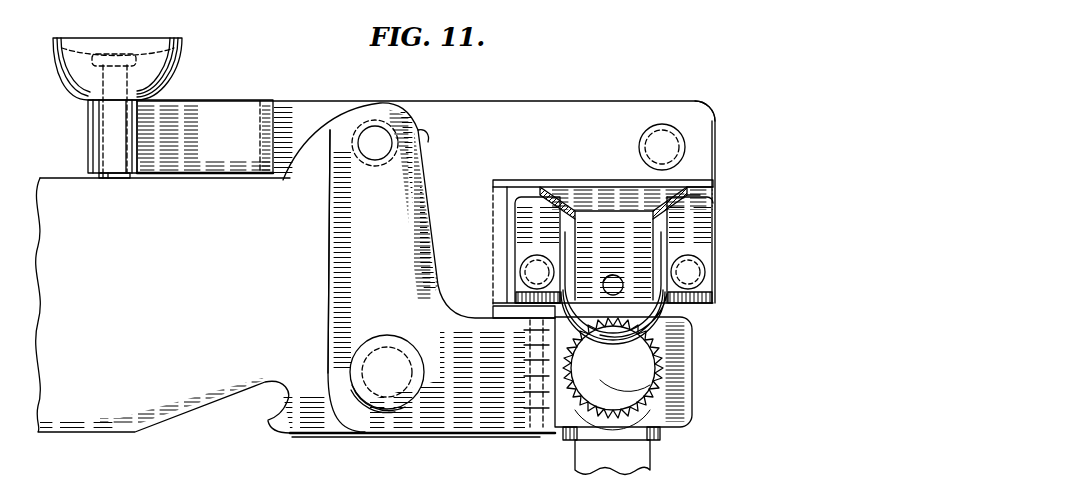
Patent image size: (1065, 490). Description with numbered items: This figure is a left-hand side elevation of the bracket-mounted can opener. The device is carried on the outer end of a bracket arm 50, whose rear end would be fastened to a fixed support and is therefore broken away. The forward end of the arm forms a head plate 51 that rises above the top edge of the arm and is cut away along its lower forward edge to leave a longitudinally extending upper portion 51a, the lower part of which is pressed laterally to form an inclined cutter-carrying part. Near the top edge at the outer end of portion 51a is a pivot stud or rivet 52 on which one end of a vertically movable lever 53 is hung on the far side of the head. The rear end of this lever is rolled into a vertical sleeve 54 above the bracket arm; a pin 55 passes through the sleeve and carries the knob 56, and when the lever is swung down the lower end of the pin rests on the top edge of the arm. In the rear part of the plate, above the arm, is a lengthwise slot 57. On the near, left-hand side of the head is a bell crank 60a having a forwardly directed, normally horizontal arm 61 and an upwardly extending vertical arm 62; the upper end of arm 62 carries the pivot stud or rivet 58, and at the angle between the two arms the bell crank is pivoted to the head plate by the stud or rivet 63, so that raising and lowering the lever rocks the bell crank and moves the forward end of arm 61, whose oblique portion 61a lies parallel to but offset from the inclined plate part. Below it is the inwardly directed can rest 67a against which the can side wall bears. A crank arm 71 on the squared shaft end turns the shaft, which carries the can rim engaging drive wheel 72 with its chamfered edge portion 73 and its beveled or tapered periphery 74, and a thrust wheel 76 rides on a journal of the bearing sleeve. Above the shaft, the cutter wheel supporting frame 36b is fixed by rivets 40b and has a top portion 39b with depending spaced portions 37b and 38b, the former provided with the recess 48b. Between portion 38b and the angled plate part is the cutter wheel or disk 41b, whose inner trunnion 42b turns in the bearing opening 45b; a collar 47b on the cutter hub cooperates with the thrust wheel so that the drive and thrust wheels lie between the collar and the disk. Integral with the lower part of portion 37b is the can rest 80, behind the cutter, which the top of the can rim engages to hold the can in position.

The bracket arm 50 is at (65, 416).
The head plate 51 is at (460, 128).
The longitudinally extending upper portion 51a is at (714, 114).
The pivot stud or rivet 52 is at (663, 130).
The vertically movable lever 53 is at (238, 104).
The vertical sleeve 54 is at (93, 136).
The pin 55 is at (108, 178).
The knob 56 is at (180, 58).
The slot 57 is at (426, 130).
The pivot stud or rivet 58 is at (360, 150).
The bell crank 60a is at (329, 315).
The forwardly directed arm 61 is at (497, 403).
The oblique portion 61a is at (692, 420).
The vertical arm 62 is at (343, 258).
The pivot stud or rivet 63 is at (406, 384).
The can rest 67a is at (570, 430).
The crank arm 71 is at (652, 466).
The can rim engaging drive wheel 72 is at (654, 375).
The chamfered edge portion 73 is at (637, 388).
The beveled or tapered peripheral portion 74 is at (640, 409).
The thrust wheel 76 is at (580, 325).
The can rest 80 is at (496, 300).
The cutter wheel supporting frame 36b is at (609, 190).
The depending portion 37b is at (715, 198).
The depending portion 38b is at (584, 226).
The top portion 39b is at (580, 192).
The rivets 40b is at (520, 265).
The cutter wheel or disk 41b is at (698, 315).
The inner trunnion 42b is at (608, 276).
The bearing opening 45b is at (621, 278).
The collar 47b is at (564, 266).
The recess 48b is at (662, 262).